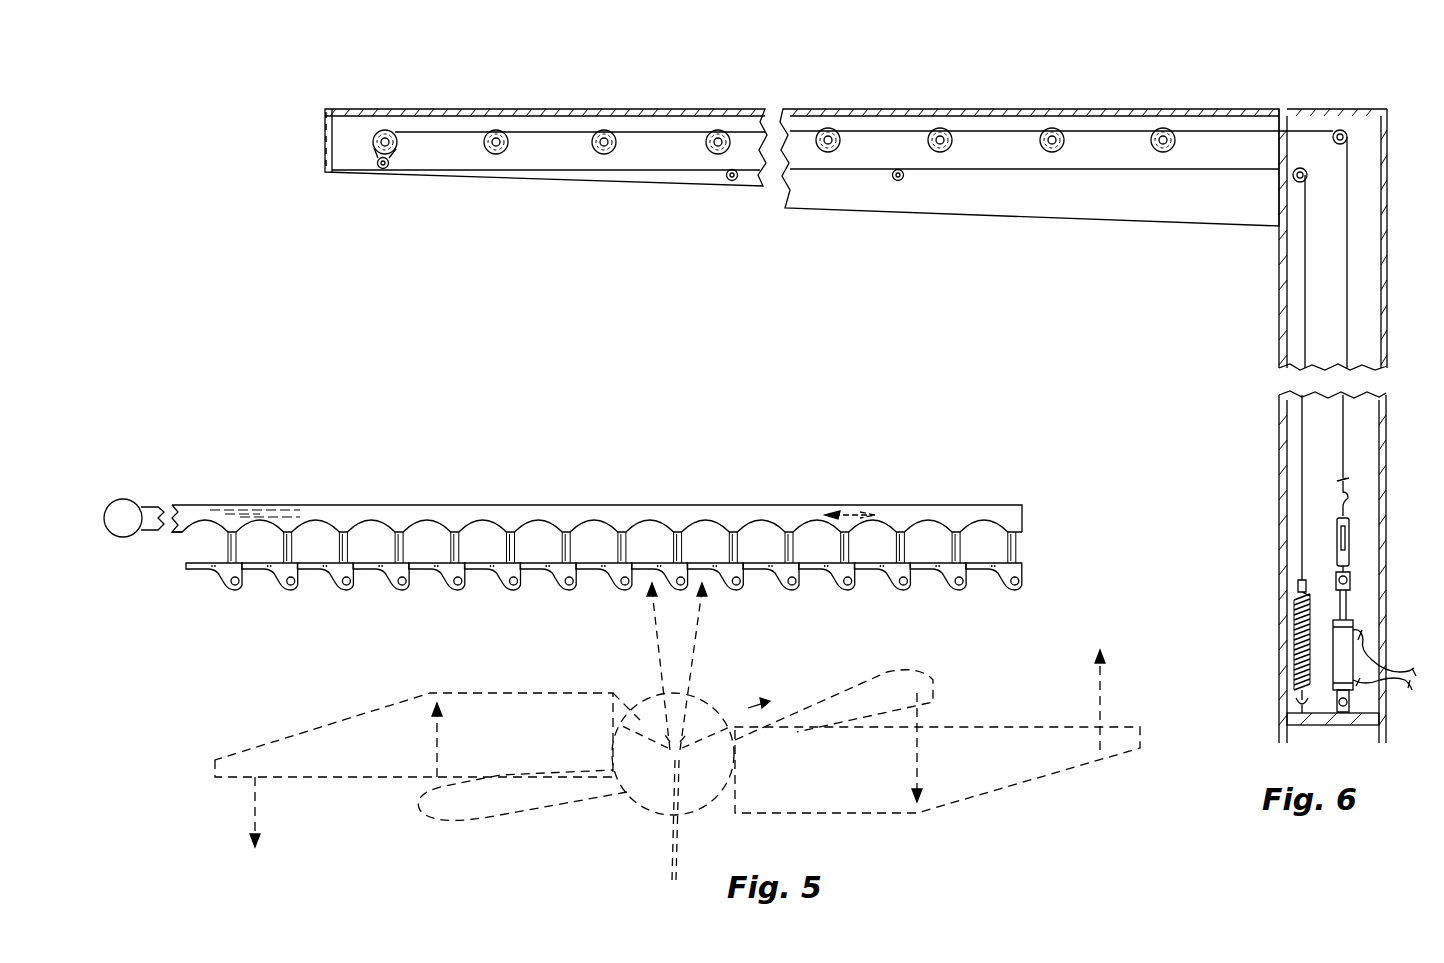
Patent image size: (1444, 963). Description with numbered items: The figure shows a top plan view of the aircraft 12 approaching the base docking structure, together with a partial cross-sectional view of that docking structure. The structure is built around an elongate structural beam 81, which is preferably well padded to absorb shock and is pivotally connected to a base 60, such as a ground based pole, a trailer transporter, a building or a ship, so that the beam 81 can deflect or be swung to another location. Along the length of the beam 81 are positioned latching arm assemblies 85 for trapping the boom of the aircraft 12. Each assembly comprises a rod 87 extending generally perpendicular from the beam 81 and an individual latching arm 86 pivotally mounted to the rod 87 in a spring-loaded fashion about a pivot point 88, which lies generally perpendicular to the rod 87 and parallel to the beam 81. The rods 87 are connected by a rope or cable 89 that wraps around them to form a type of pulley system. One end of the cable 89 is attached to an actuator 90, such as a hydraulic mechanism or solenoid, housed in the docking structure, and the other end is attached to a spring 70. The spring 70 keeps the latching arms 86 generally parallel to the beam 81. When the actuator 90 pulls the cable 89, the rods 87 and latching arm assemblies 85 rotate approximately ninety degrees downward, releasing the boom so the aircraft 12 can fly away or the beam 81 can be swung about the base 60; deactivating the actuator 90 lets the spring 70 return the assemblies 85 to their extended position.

In FIG. 5, the aircraft 12 is at (624, 814).
In FIG. 5, the base 60 is at (130, 512).
In FIG. 6, the spring 70 is at (1298, 632).
In FIG. 5, the beam 81 is at (1010, 507).
In FIG. 5, the latching arm assembly 85 is at (946, 583).
In FIG. 5, the latching arm 86 is at (190, 566).
In FIG. 6, the rod 87 is at (1163, 127).
In FIG. 5, the rod 87 is at (228, 547).
In FIG. 5, the pivot point 88 is at (237, 584).
In FIG. 6, the cable 89 is at (1347, 255).
In FIG. 6, the actuator 90 is at (1357, 601).